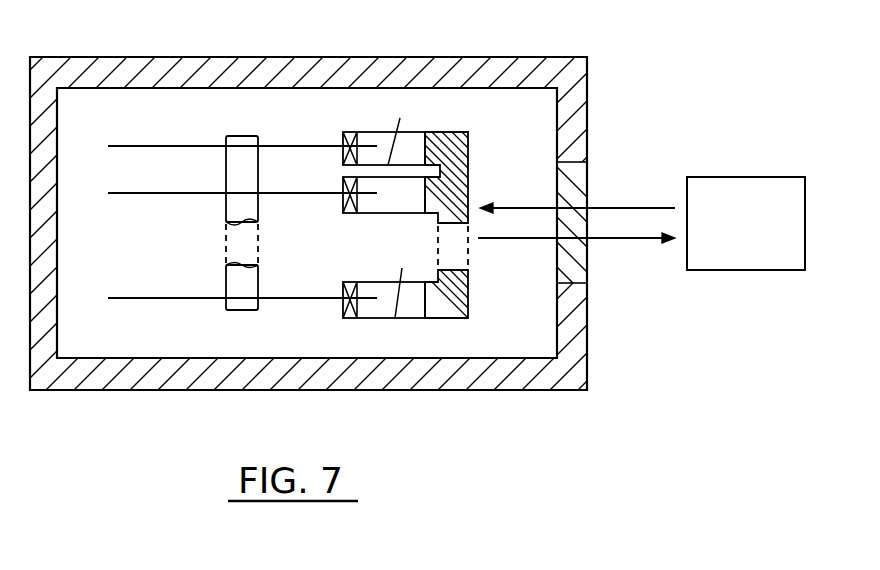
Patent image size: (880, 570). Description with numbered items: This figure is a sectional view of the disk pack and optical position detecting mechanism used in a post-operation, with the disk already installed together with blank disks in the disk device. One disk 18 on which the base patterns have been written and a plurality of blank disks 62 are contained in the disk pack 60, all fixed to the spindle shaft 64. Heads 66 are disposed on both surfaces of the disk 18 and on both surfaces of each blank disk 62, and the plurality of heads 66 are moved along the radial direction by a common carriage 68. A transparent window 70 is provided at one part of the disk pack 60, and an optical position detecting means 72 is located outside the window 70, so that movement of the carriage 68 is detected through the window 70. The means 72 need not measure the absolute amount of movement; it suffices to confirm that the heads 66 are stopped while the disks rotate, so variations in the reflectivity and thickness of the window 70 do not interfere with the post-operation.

The disk pack 60 is at (432, 60).
The disk 18 is at (136, 145).
The blank disks 62 is at (148, 297).
The spindle shaft 64 is at (247, 136).
The heads 66 is at (389, 132).
The carriage 68 is at (470, 298).
The transparent window 70 is at (578, 188).
The optical position detecting means 72 is at (761, 243).